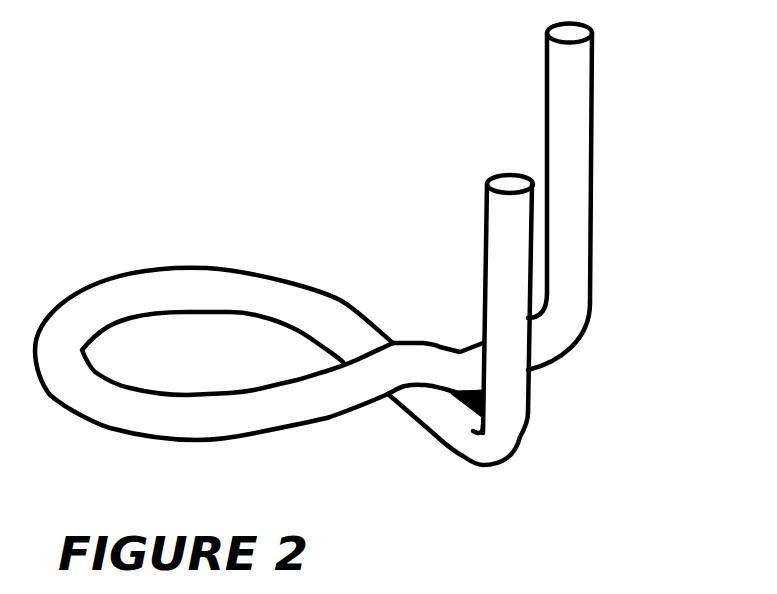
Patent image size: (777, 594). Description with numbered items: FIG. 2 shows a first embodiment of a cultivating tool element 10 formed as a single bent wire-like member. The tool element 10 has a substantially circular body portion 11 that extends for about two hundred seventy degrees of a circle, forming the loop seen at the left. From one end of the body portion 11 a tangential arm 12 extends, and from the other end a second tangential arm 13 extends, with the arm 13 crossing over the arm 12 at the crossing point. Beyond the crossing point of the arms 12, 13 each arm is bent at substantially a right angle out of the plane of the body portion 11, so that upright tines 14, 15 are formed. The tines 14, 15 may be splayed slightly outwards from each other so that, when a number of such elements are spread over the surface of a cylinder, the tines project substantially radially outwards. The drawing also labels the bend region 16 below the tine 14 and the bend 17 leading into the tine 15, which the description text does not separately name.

The tool element 10 is at (384, 259).
The body portion 11 is at (140, 293).
The tangential arm 12 is at (357, 333).
The tangential arm 13 is at (362, 387).
The tine 14 is at (512, 273).
The tine 15 is at (567, 134).
The U-shaped bend 16 is at (502, 435).
The bend 17 is at (550, 320).